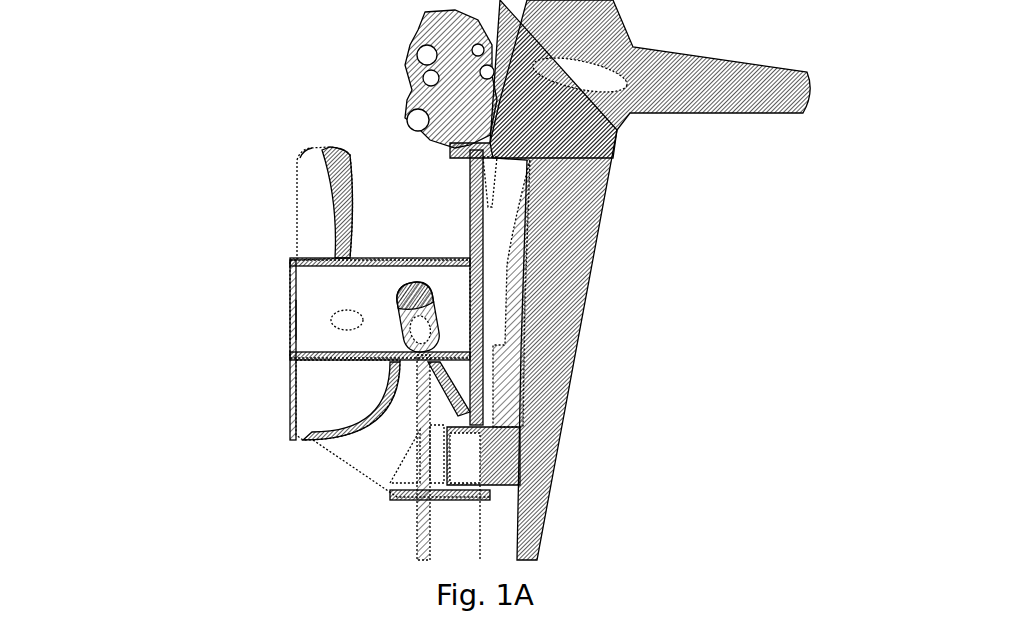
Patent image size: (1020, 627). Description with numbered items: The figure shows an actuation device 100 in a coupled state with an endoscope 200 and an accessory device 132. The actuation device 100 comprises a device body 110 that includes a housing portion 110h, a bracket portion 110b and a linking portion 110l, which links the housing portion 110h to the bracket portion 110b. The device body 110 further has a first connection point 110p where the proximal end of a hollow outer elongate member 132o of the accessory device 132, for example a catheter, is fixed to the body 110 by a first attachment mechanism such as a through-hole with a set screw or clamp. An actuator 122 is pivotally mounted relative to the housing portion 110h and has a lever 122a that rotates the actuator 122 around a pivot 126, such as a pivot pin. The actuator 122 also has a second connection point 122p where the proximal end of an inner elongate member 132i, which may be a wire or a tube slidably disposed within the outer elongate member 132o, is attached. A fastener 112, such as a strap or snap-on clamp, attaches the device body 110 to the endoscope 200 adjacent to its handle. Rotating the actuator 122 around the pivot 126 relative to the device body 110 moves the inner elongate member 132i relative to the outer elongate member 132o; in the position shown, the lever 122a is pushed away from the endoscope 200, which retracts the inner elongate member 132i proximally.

The actuation device 100 is at (383, 340).
The device body 110 is at (426, 325).
The housing portion 110h is at (300, 320).
The linking portion 110l is at (300, 407).
The bracket portion 110b is at (363, 453).
The first connection point 110p is at (430, 363).
The fastener 112 is at (547, 465).
The actuator 122 is at (316, 238).
The lever 122a is at (293, 160).
The second connection point 122p is at (427, 293).
The pivot 126 is at (345, 318).
The accessory device 132 is at (486, 430).
The inner elongate member 132i is at (433, 323).
The hollow outer elongate member 132o is at (430, 387).
The endoscope 200 is at (603, 287).